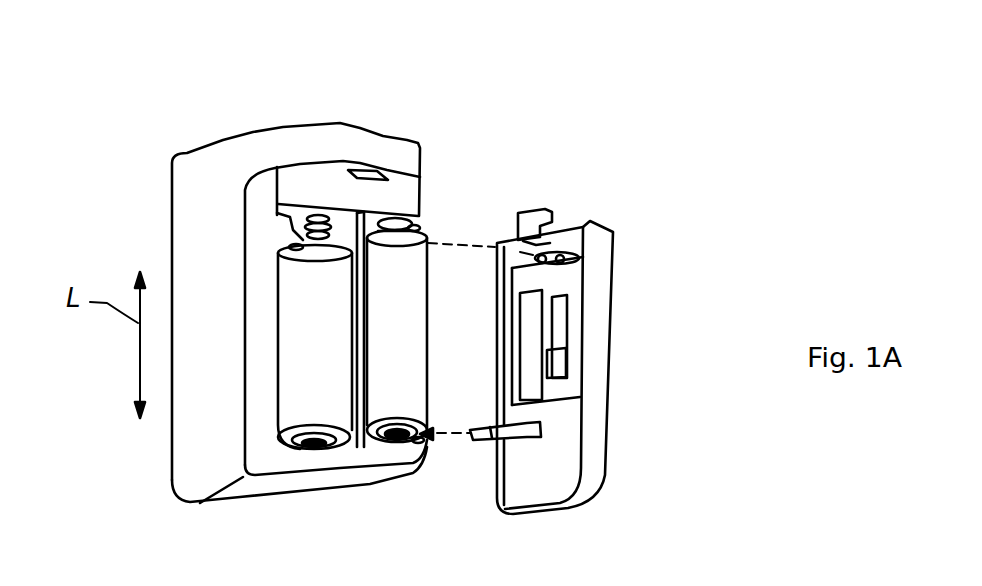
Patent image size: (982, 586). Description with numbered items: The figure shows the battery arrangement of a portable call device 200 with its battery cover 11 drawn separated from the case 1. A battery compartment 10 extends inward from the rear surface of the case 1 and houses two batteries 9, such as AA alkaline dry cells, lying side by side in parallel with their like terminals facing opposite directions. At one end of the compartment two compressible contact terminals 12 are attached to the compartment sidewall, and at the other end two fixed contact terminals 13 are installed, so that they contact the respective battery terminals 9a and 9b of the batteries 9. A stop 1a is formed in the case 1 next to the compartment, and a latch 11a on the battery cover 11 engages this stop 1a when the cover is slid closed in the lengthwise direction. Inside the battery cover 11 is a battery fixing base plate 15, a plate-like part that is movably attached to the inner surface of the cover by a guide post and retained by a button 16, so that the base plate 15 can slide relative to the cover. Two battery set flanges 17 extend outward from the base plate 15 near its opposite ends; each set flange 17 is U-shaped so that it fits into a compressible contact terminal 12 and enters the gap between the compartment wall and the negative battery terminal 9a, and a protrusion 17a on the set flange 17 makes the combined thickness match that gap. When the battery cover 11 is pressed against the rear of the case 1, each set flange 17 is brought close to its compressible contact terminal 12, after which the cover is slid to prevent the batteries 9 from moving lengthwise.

The case 1 is at (168, 204).
The stop 1a is at (367, 165).
The battery 9 is at (303, 315).
The negative battery terminal 9a is at (294, 248).
The battery terminal 9b is at (418, 229).
The battery compartment 10 is at (367, 450).
The battery cover 11 is at (604, 477).
The latch 11a is at (533, 213).
The compressible contact terminal 12 is at (313, 210).
The fixed contact terminal 13 is at (397, 217).
The battery fixing base plate 15 is at (563, 425).
The button 16 is at (553, 373).
The battery set flange 17 is at (579, 262).
The protrusion 17a is at (490, 428).
The call device 200 is at (587, 93).